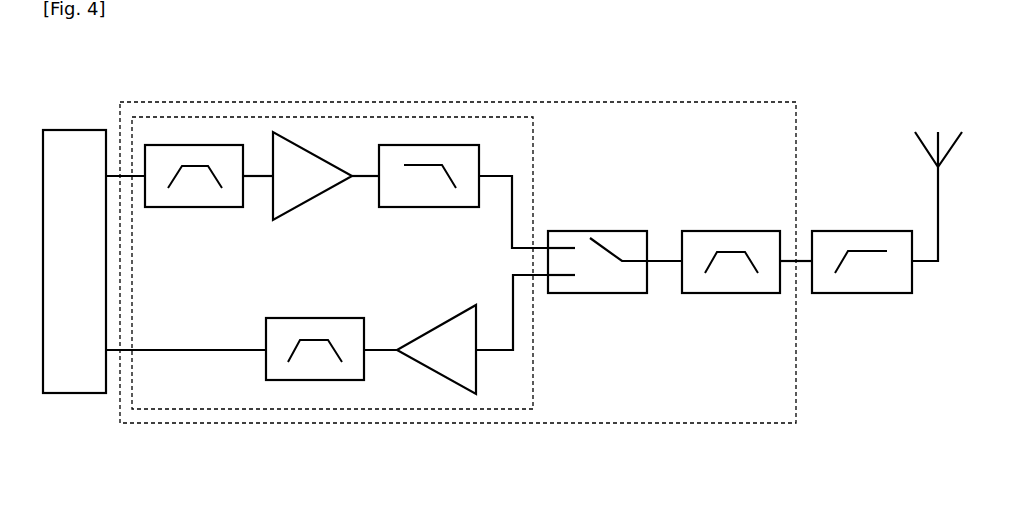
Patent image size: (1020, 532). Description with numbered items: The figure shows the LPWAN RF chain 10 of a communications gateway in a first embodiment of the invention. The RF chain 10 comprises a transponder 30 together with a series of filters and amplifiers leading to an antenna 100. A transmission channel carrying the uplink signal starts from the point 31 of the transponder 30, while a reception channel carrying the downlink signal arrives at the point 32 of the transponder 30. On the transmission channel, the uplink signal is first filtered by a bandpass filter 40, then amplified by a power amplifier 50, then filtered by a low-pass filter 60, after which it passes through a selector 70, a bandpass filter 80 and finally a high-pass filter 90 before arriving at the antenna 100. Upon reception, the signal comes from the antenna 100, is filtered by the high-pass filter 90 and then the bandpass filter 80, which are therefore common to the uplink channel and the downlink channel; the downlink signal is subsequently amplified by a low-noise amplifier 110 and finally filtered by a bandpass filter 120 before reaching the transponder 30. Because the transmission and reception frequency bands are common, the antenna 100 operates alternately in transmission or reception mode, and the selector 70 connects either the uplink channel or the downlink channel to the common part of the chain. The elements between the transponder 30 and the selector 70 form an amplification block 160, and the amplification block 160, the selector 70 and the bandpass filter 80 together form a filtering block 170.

The LPWAN RF chain 10 is at (177, 453).
The transponder 30 is at (77, 128).
The point of the transponder (transmitter) 31 is at (112, 176).
The point of the transponder (receiver) 32 is at (172, 350).
The bandpass filter 40 is at (207, 145).
The power amplifier 50 is at (313, 150).
The low-pass filter 60 is at (429, 145).
The selector 70 is at (600, 230).
The bandpass filter 80 is at (733, 230).
The high-pass filter 90 is at (858, 294).
The antenna 100 is at (928, 138).
The low-noise amplifier 110 is at (436, 375).
The bandpass filter 120 is at (325, 381).
The amplification block 160 is at (533, 350).
The filtering block 170 is at (682, 424).